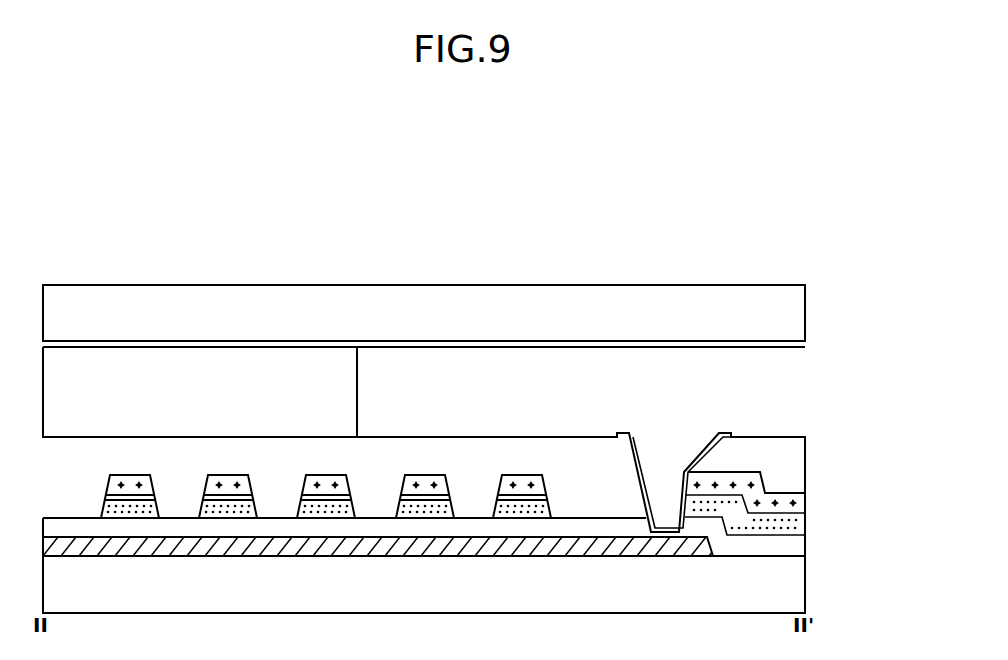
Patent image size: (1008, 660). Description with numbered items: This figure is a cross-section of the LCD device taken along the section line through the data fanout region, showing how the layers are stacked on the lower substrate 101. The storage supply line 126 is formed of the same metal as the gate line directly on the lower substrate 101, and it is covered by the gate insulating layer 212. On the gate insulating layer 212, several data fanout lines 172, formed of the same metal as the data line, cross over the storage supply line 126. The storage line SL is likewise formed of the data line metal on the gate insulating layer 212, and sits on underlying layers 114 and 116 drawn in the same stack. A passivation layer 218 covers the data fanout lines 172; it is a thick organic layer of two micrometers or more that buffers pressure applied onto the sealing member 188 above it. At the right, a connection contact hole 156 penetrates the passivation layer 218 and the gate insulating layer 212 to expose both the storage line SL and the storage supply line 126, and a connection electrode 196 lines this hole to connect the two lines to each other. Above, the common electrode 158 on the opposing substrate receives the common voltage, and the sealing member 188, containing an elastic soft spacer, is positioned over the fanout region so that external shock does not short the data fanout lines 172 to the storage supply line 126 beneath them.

The common electrode 158 is at (805, 342).
The sealing member 188 is at (355, 389).
The data fanout line 172 is at (515, 474).
The connection contact hole 156 is at (662, 476).
The connection electrode 196 is at (727, 432).
The passivation layer 218 is at (805, 453).
The storage line SL is at (805, 500).
The ohmic contact layer 116 is at (805, 513).
The active layer 114 is at (805, 527).
The gate insulating layer 212 is at (805, 545).
The storage supply line 126 is at (663, 557).
The lower substrate 101 is at (805, 598).